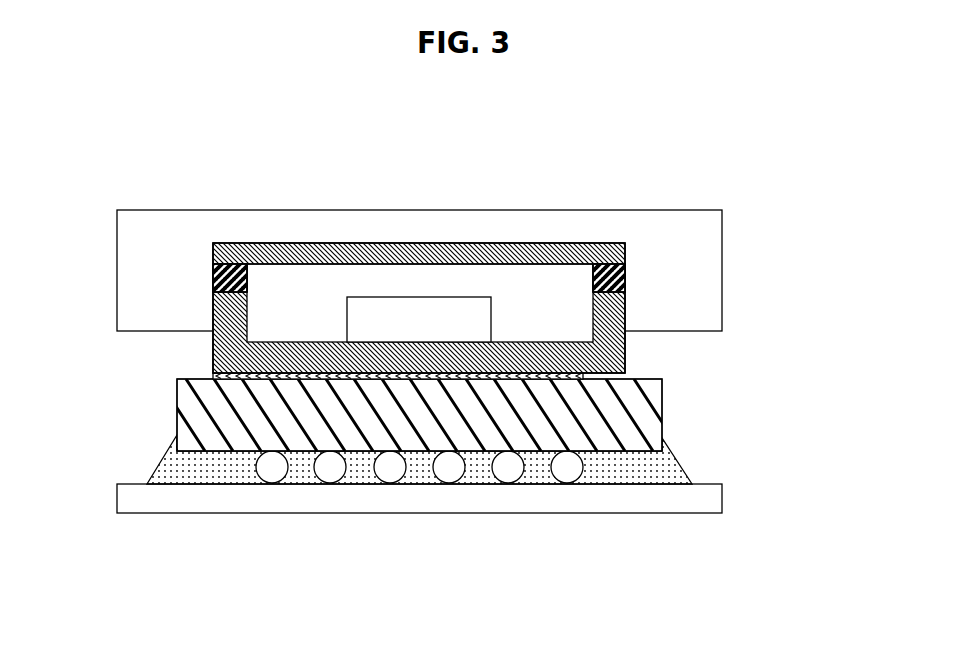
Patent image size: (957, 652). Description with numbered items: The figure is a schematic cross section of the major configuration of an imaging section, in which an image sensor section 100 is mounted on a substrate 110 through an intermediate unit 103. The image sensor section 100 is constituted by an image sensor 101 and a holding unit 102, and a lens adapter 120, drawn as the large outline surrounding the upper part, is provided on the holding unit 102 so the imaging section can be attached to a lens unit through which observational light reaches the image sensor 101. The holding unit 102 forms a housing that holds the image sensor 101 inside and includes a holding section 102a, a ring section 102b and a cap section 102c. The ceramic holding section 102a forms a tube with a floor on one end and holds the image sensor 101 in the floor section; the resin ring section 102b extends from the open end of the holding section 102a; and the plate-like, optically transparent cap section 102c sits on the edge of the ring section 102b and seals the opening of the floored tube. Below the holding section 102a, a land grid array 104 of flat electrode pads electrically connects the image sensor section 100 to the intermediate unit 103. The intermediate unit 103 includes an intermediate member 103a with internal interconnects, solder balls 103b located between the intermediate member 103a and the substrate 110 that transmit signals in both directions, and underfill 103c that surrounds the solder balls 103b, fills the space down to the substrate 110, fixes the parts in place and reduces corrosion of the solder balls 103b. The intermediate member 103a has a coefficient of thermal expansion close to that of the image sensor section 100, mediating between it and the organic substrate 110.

The image sensor section 100 is at (527, 236).
The image sensor 101 is at (418, 310).
The holding unit 102 is at (554, 307).
The holding section 102a is at (625, 303).
The ring section 102b is at (625, 272).
The cap section 102c is at (625, 252).
The intermediate unit 103 is at (506, 480).
The intermediate member 103a is at (662, 420).
The solder balls 103b is at (272, 483).
The underfill 103c is at (665, 458).
The land grid array 104 is at (213, 375).
The substrate 110 is at (713, 497).
The lens adapter 120 is at (713, 225).